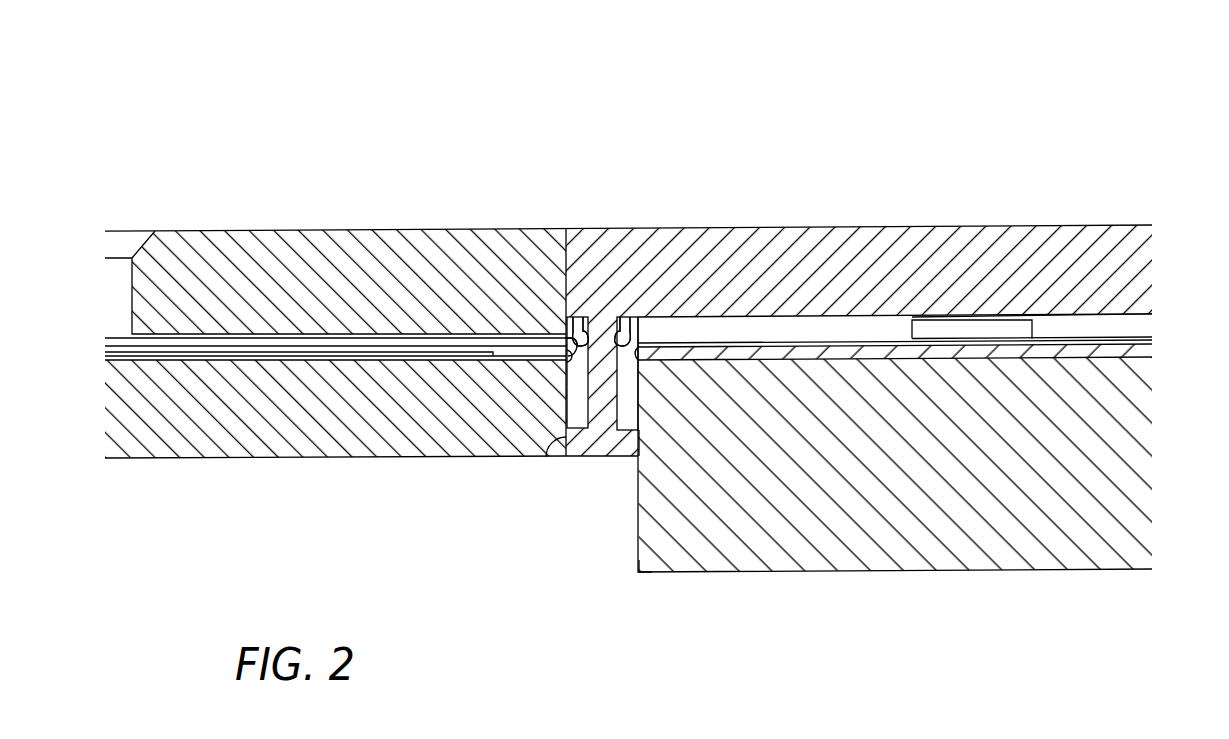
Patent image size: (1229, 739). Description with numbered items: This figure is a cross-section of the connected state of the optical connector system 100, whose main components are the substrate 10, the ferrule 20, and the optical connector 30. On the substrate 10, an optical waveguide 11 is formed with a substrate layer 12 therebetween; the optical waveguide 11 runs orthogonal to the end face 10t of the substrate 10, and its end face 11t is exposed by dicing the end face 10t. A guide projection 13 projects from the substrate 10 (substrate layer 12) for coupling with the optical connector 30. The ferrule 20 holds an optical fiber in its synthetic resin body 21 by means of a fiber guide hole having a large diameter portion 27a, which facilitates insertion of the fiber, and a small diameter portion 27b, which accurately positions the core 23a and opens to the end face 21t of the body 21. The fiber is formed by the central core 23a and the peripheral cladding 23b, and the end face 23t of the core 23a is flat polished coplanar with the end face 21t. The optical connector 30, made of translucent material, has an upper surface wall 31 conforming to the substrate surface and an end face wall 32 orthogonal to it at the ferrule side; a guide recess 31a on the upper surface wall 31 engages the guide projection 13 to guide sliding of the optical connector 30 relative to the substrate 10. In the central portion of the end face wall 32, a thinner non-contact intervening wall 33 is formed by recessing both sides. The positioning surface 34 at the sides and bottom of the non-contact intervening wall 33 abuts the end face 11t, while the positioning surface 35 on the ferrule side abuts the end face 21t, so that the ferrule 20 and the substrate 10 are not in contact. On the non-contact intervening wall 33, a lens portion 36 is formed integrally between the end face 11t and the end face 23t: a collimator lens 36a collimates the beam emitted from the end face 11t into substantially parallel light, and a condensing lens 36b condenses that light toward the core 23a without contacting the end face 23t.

The optical connector system 100 is at (747, 137).
The substrate 10 is at (915, 578).
The end face of the substrate 10t is at (639, 573).
The optical waveguide 11 is at (843, 347).
The end face of the optical waveguide 11t is at (638, 350).
The substrate layer 12 is at (898, 350).
The guide projection 13 is at (1013, 320).
The ferrule 20 is at (403, 223).
The body of the ferrule 21 is at (245, 230).
The end face of the body 21t is at (570, 229).
The core 23a is at (565, 355).
The end face of the core 23t is at (571, 342).
The cladding 23b is at (537, 337).
The large diameter portion 27a is at (384, 352).
The small diameter portion 27b is at (497, 352).
The optical connector 30 is at (815, 222).
The upper surface wall 31 is at (965, 235).
The guide recess 31a is at (1086, 330).
The end face wall 32 is at (602, 397).
The non-contact intervening wall 33 is at (615, 455).
The positioning surface 34 is at (642, 443).
The positioning surface 35 is at (560, 325).
The lens portion 36 is at (687, 160).
The collimator lens 36a is at (625, 336).
The condensing lens 36b is at (580, 332).